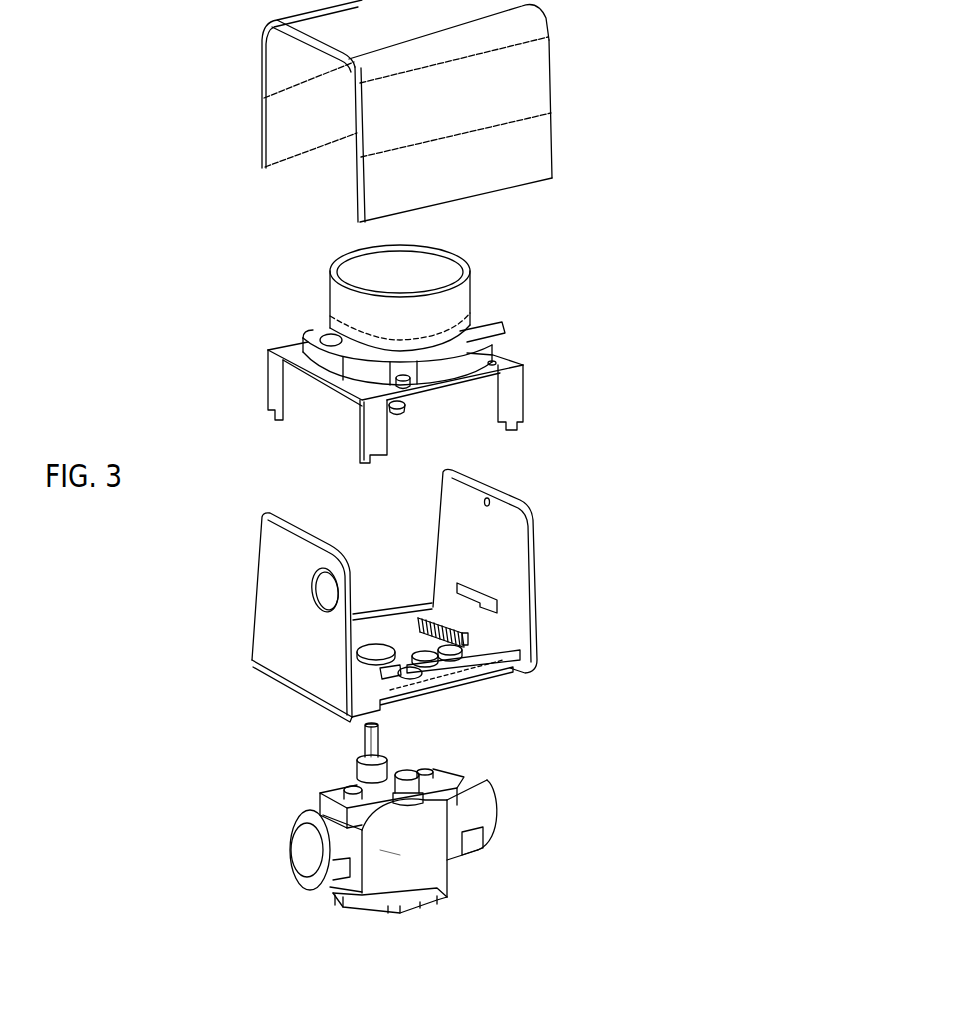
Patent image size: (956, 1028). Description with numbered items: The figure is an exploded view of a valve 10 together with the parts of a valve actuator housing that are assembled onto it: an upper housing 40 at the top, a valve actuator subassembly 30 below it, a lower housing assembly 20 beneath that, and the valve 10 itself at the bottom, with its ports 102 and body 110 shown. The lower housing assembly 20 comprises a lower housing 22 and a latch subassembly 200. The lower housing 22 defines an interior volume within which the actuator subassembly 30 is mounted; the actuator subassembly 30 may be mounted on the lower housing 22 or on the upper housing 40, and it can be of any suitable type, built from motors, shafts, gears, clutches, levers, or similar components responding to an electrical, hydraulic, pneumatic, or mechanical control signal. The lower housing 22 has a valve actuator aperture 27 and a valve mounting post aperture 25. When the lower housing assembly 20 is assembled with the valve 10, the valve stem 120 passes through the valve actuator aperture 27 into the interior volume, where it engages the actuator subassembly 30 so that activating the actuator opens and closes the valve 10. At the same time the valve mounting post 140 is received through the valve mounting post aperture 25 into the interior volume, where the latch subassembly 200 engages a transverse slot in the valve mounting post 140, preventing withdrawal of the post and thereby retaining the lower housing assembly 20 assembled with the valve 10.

The valve 10 is at (413, 851).
The lower housing assembly 20 is at (424, 607).
The lower housing 22 is at (265, 620).
The valve mounting post aperture 25 is at (412, 679).
The valve actuator aperture 27 is at (376, 646).
The valve actuator subassembly 30 is at (558, 308).
The upper housing 40 is at (530, 78).
The valve port 102 is at (502, 803).
The valve body 110 is at (428, 868).
The valve stem 120 is at (363, 742).
The valve mounting post 140 is at (410, 782).
The latch subassembly 200 is at (415, 643).